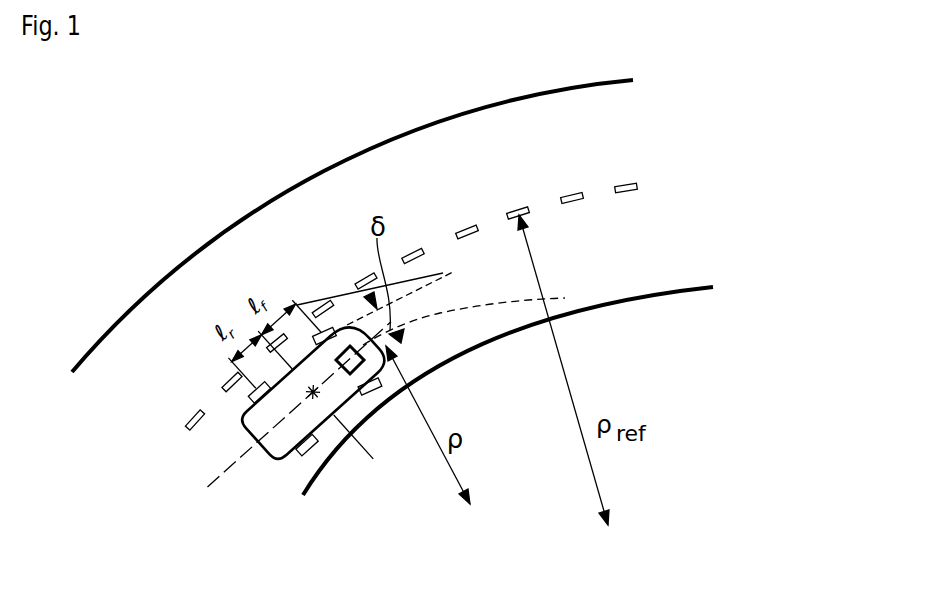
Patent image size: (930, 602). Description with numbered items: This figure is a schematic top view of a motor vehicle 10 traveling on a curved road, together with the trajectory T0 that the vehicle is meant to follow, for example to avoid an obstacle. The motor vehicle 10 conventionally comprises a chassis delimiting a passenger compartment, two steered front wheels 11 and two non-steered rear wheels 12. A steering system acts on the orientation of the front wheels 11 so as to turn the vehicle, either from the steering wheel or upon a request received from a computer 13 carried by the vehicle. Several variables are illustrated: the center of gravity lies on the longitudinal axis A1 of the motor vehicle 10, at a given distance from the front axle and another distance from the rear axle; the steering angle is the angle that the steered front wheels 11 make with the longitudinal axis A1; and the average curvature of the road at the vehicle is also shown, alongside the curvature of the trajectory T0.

The motor vehicle 10 is at (243, 427).
The steered front wheels 11 is at (376, 398).
The non-steered rear wheels 12 is at (316, 448).
The computer 13 is at (352, 345).
The longitudinal axis A1 is at (237, 460).
The trajectory T0 is at (487, 309).